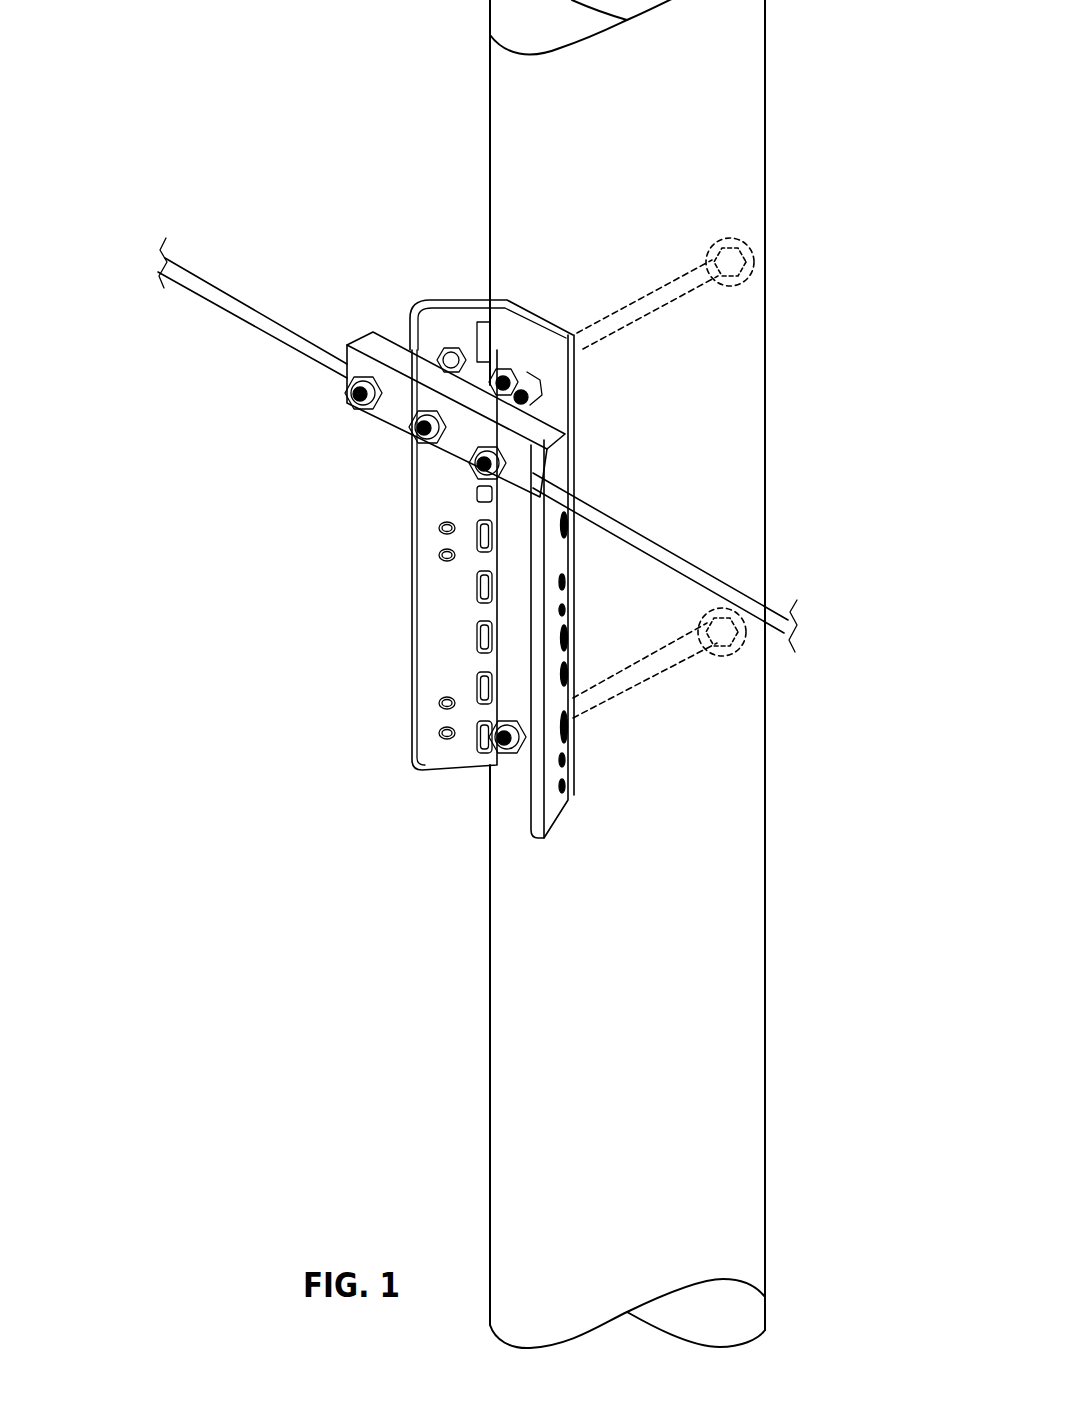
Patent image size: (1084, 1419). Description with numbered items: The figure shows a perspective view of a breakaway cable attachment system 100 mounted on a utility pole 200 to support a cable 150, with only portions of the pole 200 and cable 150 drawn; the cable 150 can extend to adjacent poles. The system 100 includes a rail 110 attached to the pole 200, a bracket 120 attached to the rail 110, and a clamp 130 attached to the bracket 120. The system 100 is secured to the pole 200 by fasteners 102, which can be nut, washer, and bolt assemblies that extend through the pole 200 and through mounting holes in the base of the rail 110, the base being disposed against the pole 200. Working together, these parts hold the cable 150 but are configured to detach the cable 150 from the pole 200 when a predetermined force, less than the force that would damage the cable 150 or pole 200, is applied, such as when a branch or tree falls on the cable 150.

The breakaway cable attachment system 100 is at (378, 258).
The fasteners 102 is at (670, 303).
The rail 110 is at (412, 662).
The bracket 120 is at (478, 352).
The clamp 130 is at (393, 427).
The cable 150 is at (273, 333).
The utility pole 200 is at (488, 123).